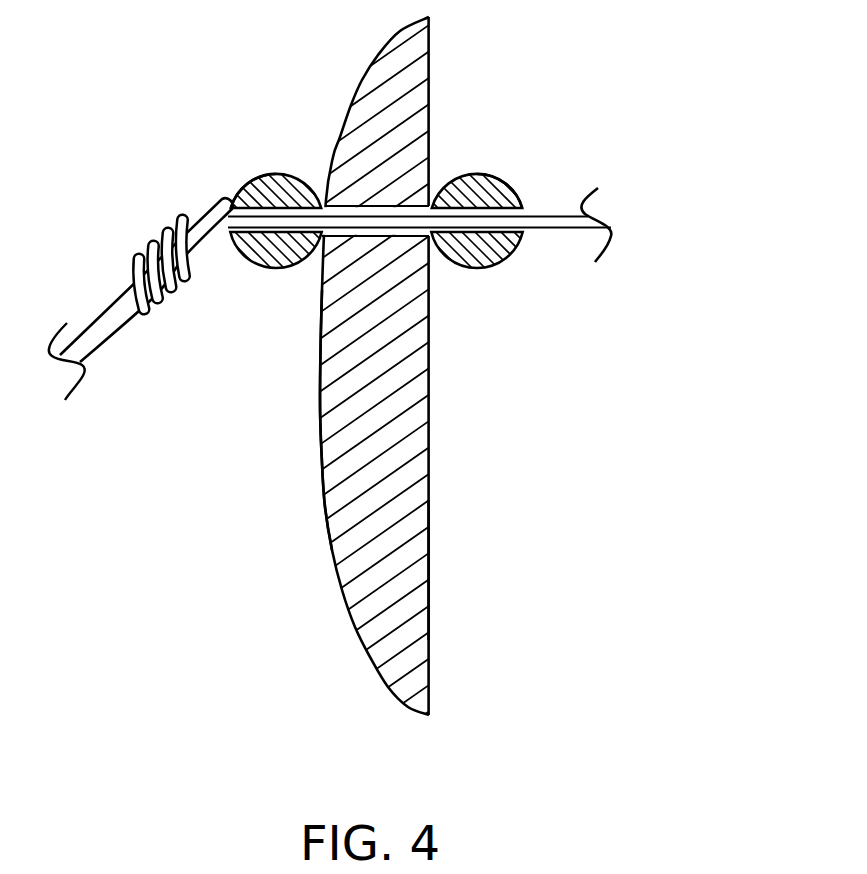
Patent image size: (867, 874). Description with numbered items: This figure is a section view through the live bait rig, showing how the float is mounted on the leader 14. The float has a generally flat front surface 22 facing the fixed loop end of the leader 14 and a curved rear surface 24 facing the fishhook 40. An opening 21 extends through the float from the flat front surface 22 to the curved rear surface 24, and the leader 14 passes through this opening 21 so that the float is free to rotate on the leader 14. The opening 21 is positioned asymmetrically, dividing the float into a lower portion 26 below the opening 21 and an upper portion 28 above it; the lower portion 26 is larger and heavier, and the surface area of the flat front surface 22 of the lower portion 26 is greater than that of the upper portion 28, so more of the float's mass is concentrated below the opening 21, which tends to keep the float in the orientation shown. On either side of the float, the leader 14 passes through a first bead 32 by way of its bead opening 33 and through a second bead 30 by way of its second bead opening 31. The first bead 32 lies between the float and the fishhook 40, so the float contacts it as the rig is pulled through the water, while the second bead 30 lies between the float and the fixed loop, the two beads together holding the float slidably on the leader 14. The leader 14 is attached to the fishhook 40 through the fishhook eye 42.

The leader 14 is at (557, 216).
The opening 21 is at (393, 210).
The flat front surface 22 is at (430, 450).
The curved rear surface 24 is at (320, 465).
The lower portion 26 is at (460, 569).
The upper portion 28 is at (468, 46).
The second bead 30 is at (496, 268).
The second bead opening 31 is at (502, 206).
The first bead 32 is at (262, 170).
The bead opening 33 is at (234, 198).
The fishhook 40 is at (95, 322).
The fishhook eye 42 is at (217, 197).